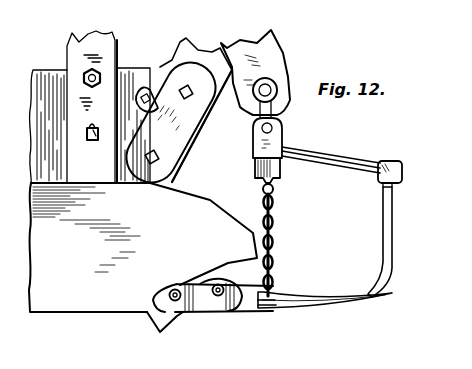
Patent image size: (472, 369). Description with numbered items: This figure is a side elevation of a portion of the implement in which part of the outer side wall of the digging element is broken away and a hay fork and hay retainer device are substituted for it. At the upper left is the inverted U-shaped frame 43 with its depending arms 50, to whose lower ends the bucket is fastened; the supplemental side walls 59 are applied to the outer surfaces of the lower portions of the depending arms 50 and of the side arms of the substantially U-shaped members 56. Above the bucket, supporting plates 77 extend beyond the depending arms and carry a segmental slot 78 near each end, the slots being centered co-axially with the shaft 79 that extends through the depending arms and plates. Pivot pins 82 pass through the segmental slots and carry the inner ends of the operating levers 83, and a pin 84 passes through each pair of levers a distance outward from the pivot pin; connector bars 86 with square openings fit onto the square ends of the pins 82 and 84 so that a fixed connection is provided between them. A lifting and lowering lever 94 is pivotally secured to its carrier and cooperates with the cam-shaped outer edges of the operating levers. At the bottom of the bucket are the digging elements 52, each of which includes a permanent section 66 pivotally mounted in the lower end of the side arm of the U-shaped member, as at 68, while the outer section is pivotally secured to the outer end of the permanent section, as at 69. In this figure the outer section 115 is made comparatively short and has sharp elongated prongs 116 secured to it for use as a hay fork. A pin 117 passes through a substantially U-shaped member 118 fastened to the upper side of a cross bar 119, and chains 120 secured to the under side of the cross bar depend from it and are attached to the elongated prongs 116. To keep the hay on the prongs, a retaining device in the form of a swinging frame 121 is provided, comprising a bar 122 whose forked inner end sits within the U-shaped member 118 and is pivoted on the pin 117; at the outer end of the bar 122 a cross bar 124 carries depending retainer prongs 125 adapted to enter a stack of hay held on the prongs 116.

The inverted U-shaped frame 43 is at (119, 50).
The depending arms 50 is at (78, 53).
The digging elements 52 is at (192, 314).
The substantially U-shaped members 56 is at (165, 333).
The supplemental side walls 59 is at (78, 314).
The permanent sections 66 is at (207, 300).
The pivot of permanent sections 68 is at (173, 289).
The pivot of replaceable sections 69 is at (222, 285).
The supporting plates 77 is at (52, 124).
The segmental slot 78 is at (148, 87).
The shaft 79 is at (88, 140).
The pivot pins 82 is at (160, 158).
The operating levers 83 is at (198, 56).
The pin 84 is at (192, 90).
The connector bars 86 is at (175, 130).
The lifting and lowering lever 94 is at (273, 50).
The outer section 115 is at (262, 307).
The elongated prongs 116 is at (344, 305).
The pin 117 is at (272, 130).
The substantially U-shaped member 118 is at (256, 150).
The cross bar 119 is at (281, 176).
The chains 120 is at (274, 251).
The swinging frame 121 is at (403, 170).
The bar 122 is at (353, 163).
The cross bar 124 is at (381, 184).
The retainer prongs 125 is at (384, 231).